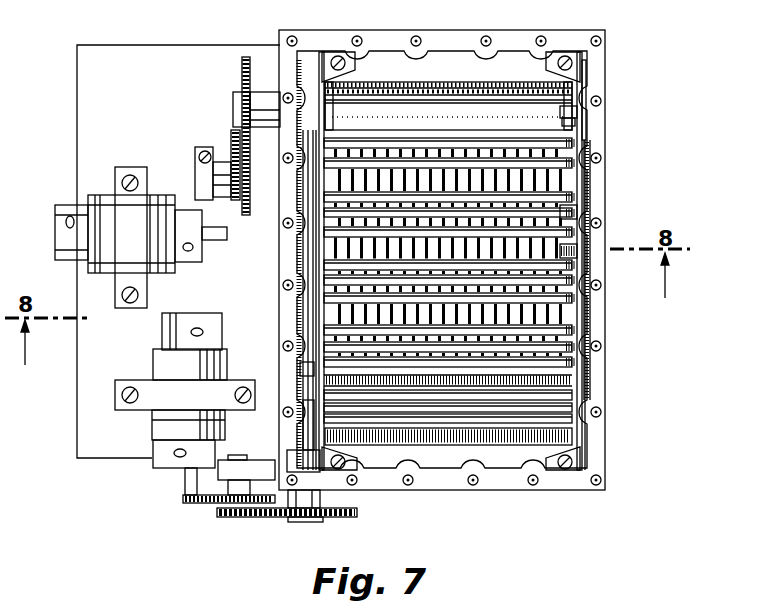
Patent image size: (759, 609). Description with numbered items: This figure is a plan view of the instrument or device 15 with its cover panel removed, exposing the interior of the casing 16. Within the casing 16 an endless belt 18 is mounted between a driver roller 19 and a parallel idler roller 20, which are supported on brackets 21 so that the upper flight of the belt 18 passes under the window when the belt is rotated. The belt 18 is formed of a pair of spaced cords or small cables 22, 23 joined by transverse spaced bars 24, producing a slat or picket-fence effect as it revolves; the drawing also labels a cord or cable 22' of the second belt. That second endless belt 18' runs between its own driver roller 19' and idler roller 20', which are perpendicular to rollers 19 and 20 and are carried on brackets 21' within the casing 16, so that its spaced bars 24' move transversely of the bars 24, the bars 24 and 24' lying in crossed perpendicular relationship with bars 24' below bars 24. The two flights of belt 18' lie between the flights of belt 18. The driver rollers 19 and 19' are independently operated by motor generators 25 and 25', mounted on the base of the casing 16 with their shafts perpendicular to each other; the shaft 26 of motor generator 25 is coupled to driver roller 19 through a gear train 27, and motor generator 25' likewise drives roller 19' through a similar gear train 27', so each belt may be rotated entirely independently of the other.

The instrument or device 15 is at (630, 381).
The casing 16 is at (508, 490).
The endless belt 18 is at (481, 184).
The second endless belt 18' is at (483, 322).
The driver roller 19 is at (448, 97).
The driver roller 19' is at (281, 265).
The idler roller 20 is at (448, 450).
The idler roller 20' is at (484, 356).
The brackets 21 is at (444, 240).
The brackets 21' is at (450, 316).
The cord or small cable 22 is at (601, 114).
The coupling 22' is at (281, 364).
The cord or small cable 23 is at (318, 251).
The transverse spaced bars 24 is at (483, 203).
The spaced bars 24' is at (602, 259).
The motor generator 25 is at (128, 220).
The motor generator 25' is at (189, 404).
The shaft 26 is at (217, 242).
The gear train 27 is at (217, 136).
The gear train 27' is at (263, 519).